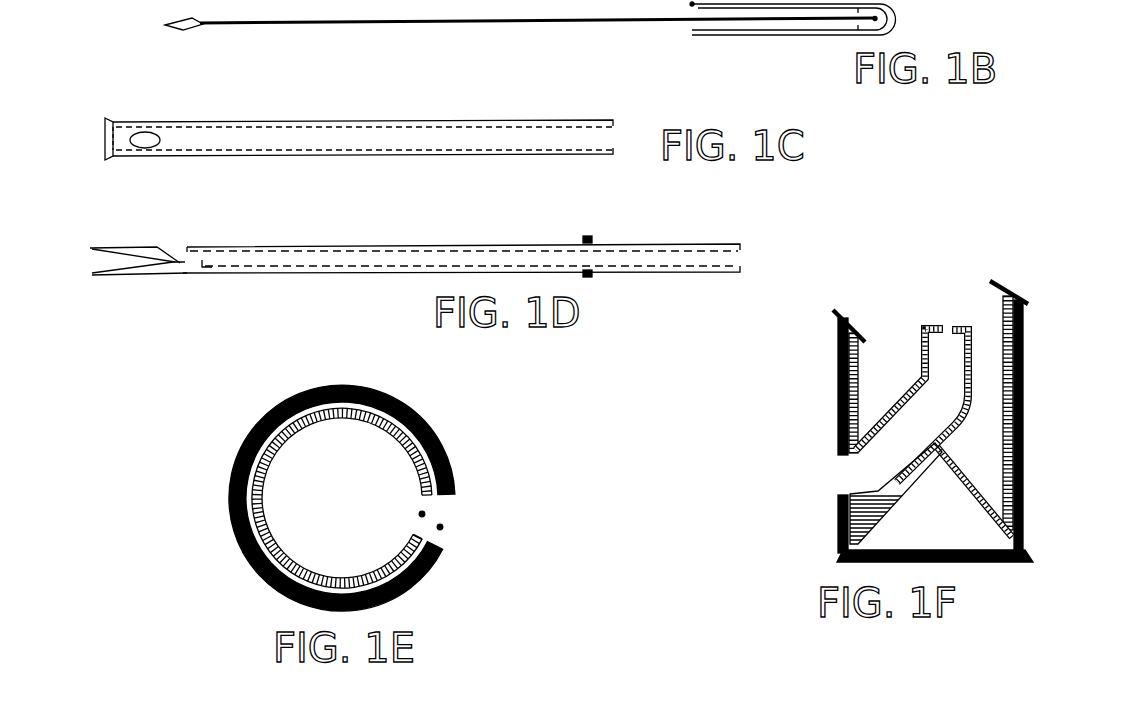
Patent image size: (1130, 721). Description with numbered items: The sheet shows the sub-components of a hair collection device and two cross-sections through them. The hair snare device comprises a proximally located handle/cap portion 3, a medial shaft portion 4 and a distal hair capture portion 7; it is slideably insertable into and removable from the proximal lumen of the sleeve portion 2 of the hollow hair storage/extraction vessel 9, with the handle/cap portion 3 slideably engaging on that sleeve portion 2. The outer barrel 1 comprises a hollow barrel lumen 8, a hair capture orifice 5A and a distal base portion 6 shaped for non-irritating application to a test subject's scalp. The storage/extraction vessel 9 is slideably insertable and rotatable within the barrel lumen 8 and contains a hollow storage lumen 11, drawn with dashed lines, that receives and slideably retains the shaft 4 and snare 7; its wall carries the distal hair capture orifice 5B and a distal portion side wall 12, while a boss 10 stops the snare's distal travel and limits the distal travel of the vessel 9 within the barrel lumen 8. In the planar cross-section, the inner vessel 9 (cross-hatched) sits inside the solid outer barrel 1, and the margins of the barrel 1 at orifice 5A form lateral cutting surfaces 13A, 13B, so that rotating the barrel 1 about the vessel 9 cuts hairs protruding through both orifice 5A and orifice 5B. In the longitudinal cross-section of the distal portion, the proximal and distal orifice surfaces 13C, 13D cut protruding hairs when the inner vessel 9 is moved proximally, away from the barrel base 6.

In FIG. 1C, the outer barrel 1 is at (363, 158).
In FIG. 1E, the outer barrel 1 is at (252, 432).
In FIG. 1F, the outer barrel 1 is at (1023, 430).
In FIG. 1D, the sleeve portion 2 is at (660, 273).
In FIG. 1B, the handle/cap portion 3 is at (760, 37).
In FIG. 1B, the medial shaft portion 4 is at (440, 23).
In FIG. 1C, the hair capture orifice 5A is at (143, 140).
In FIG. 1E, the hair capture orifice 5A is at (422, 514).
In FIG. 1F, the hair capture orifice 5A is at (841, 465).
In FIG. 1D, the distal hair capture orifice 5B is at (175, 252).
In FIG. 1E, the distal hair capture orifice 5B is at (440, 527).
In FIG. 1F, the distal hair capture orifice 5B is at (855, 473).
In FIG. 1F, the distal base portion 6 is at (1024, 556).
In FIG. 1B, the distal hair capture portion 7 is at (187, 29).
In FIG. 1C, the barrel lumen 8 is at (277, 142).
In FIG. 1D, the hair storage/extraction vessel 9 is at (322, 273).
In FIG. 1E, the hair storage/extraction vessel 9 is at (242, 455).
In FIG. 1F, the hair storage/extraction vessel 9 is at (1020, 378).
In FIG. 1D, the boss 10 is at (590, 277).
In FIG. 1D, the storage lumen 11 is at (265, 257).
In FIG. 1D, the distal portion side wall 12 is at (110, 265).
In FIG. 1F, the distal portion side wall 12 is at (980, 500).
In FIG. 1E, the lateral cutting surface 13A is at (449, 491).
In FIG. 1E, the lateral cutting surface 13B is at (437, 551).
In FIG. 1F, the proximal cutting surface 13C is at (845, 453).
In FIG. 1F, the distal cutting surface 13D is at (838, 493).